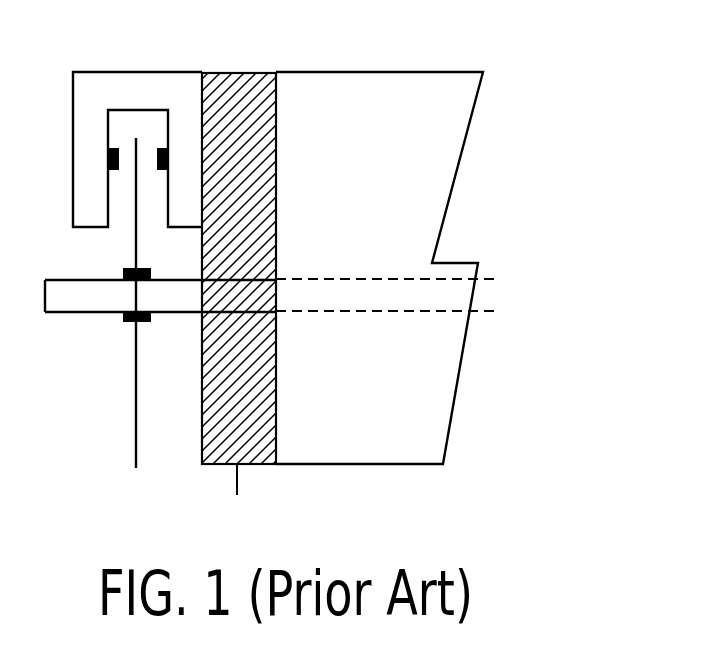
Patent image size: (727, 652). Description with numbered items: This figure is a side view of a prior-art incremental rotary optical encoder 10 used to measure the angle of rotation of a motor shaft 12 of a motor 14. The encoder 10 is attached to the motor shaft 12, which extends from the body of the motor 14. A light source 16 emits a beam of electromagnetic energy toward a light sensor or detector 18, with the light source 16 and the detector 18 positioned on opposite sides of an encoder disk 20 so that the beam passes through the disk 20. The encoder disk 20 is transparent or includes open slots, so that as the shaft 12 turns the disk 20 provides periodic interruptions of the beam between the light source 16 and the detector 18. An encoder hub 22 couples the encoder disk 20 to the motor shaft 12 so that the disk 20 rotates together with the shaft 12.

The incremental rotary optical encoder 10 is at (325, 256).
The motor shaft 12 is at (435, 297).
The motor 14 is at (358, 389).
The light source 16 is at (168, 157).
The light sensor or detector 18 is at (108, 158).
The encoder disk 20 is at (135, 413).
The encoder hub 22 is at (123, 317).